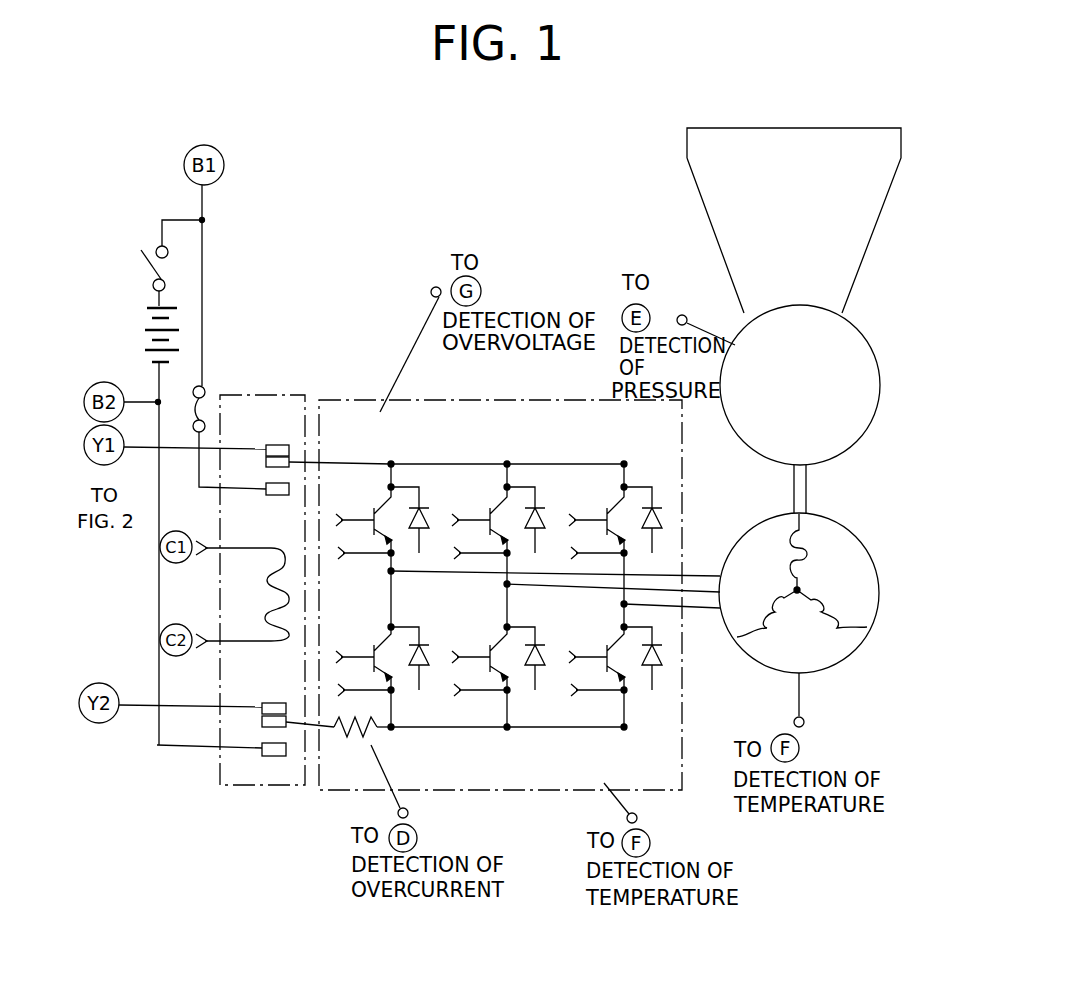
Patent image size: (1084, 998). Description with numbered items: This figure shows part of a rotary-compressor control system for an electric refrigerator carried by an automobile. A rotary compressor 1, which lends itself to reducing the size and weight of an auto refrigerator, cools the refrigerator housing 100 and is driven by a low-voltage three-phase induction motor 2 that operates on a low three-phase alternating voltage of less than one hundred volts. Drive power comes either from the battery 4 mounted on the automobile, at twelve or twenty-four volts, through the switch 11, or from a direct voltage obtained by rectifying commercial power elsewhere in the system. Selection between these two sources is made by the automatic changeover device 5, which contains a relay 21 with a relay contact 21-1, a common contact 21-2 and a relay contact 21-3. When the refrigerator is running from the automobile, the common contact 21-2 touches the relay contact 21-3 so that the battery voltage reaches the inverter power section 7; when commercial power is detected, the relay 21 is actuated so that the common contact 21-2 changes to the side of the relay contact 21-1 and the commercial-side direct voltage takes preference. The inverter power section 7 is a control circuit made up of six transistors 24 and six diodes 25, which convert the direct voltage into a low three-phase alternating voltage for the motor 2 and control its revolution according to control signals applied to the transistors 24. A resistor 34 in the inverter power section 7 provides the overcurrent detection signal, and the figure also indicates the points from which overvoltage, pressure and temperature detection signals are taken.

The refrigerator housing 100 is at (775, 128).
The rotary compressor 1 is at (845, 318).
The low-voltage three-phase induction motor 2 is at (830, 522).
The battery 4 is at (146, 325).
The switch 11 is at (152, 270).
The automatic changeover device 5 is at (258, 393).
The inverter power section 7 is at (352, 396).
The relay 21 is at (230, 600).
The relay contact 21-1 is at (278, 444).
The common contact 21-2 is at (280, 466).
The relay contact 21-3 is at (284, 500).
The transistor 24 is at (376, 508).
The diode 25 is at (440, 508).
The resistor 34 is at (350, 737).